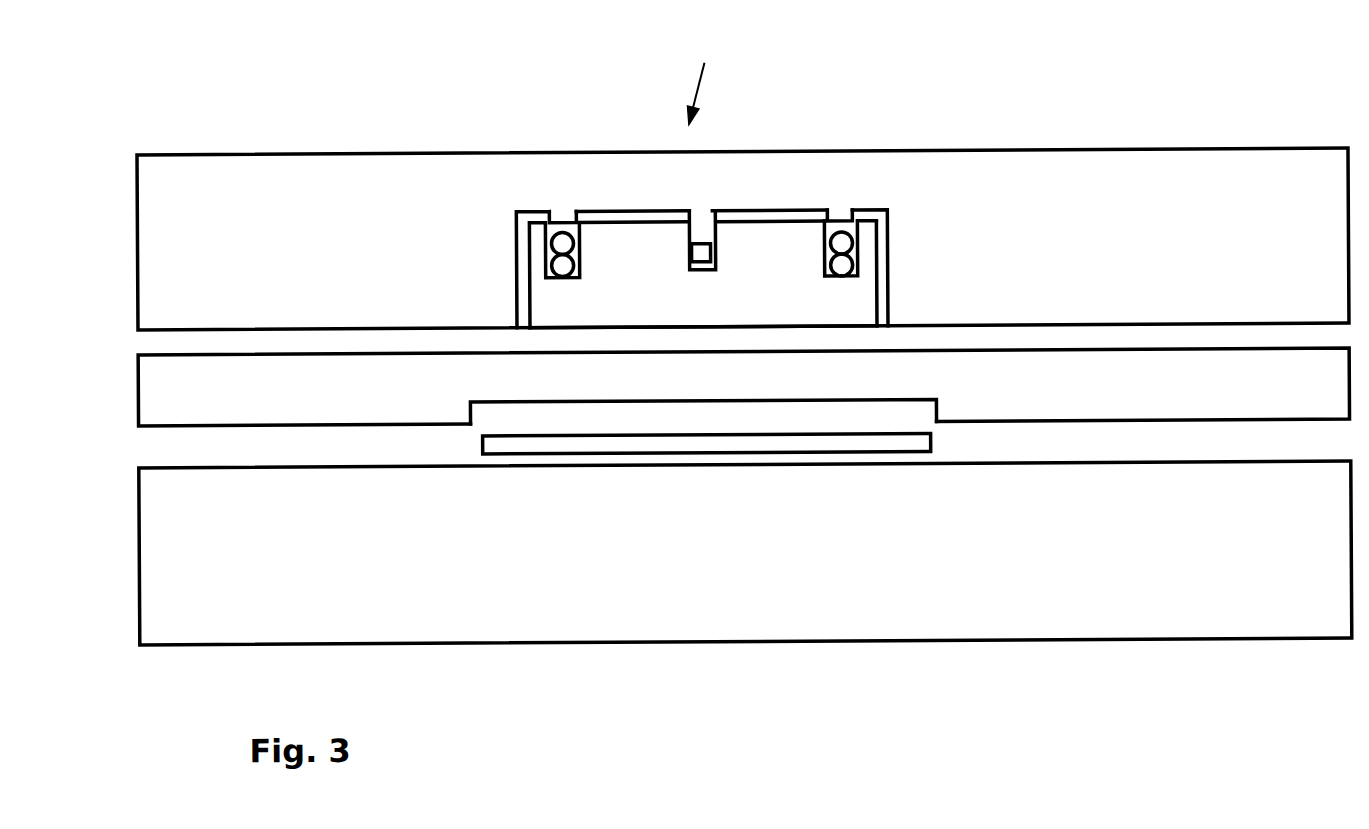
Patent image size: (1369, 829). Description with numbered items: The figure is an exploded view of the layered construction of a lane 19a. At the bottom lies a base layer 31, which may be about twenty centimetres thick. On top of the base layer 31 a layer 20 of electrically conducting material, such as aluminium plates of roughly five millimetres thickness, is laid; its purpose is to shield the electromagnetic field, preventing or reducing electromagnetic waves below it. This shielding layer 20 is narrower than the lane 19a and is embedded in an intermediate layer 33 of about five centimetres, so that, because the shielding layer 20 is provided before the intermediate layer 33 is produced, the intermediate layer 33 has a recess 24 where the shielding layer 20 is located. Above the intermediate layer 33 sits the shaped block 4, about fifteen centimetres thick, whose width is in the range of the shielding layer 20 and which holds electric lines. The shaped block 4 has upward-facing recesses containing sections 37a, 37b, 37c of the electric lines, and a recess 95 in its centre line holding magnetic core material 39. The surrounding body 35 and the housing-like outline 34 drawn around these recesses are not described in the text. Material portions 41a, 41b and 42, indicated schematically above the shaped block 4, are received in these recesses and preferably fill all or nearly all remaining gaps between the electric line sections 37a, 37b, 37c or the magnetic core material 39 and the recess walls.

The lane 19a is at (715, 70).
The material portion 41a is at (563, 217).
The material portion 41b is at (840, 219).
The material portion 42 is at (702, 223).
The section of electric line 37a is at (842, 269).
The section of electric line 37b is at (563, 270).
The section of electric line 37c is at (563, 246).
The housing 34 is at (883, 321).
The magnetic core material 39 is at (814, 256).
The recess 95 is at (703, 309).
The shaped block 4 is at (632, 310).
The body 35 is at (217, 257).
The intermediate layer 33 is at (1166, 403).
The recess 24 is at (868, 419).
The layer of electrically conducting material 20 is at (811, 447).
The base layer 31 is at (741, 623).